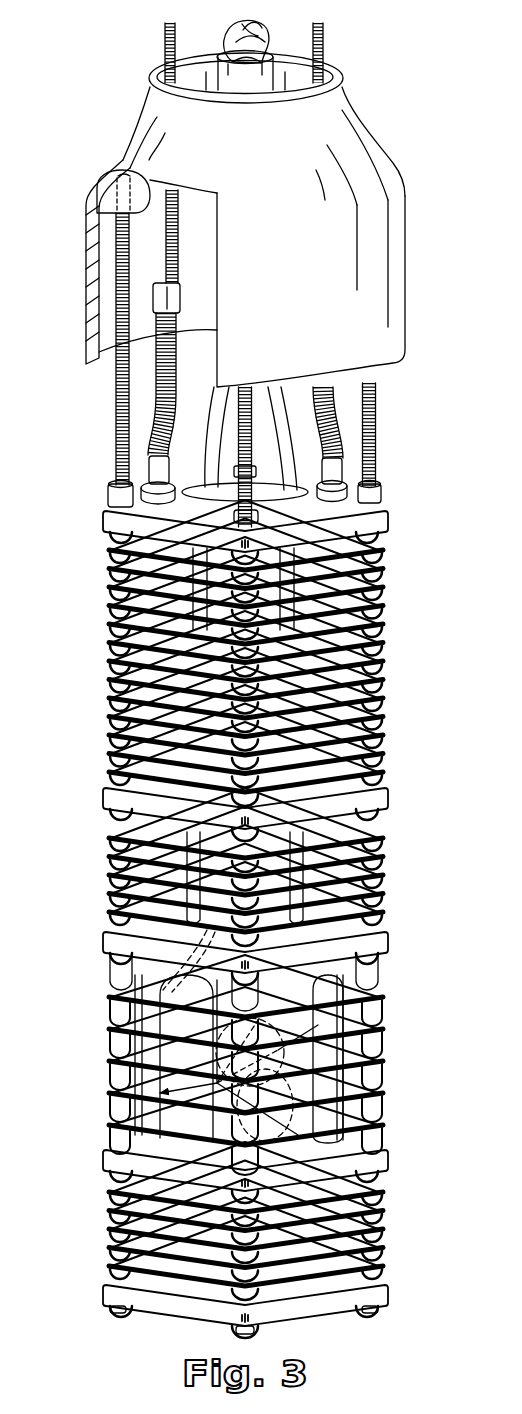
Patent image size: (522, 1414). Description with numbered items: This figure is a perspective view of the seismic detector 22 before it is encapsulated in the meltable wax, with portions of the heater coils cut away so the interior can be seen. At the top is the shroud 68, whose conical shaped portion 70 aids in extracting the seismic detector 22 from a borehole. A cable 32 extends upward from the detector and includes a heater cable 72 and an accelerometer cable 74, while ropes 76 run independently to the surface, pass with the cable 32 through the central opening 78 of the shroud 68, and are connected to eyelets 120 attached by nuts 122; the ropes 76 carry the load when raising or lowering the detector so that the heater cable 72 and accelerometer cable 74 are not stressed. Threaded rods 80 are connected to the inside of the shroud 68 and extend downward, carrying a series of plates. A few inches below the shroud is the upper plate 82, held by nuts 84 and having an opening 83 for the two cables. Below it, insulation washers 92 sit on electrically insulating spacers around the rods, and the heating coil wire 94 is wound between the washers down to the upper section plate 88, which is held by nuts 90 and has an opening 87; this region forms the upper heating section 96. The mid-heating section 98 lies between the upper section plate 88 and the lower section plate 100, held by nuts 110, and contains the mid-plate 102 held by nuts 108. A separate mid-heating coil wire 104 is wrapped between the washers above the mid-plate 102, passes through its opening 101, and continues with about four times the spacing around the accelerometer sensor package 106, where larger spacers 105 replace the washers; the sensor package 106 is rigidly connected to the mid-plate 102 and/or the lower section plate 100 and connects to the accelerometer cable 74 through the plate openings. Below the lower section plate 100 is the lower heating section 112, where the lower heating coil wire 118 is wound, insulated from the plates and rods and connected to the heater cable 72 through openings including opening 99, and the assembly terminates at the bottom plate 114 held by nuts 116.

The seismic detector 22 is at (431, 174).
The cable 32 is at (240, 82).
The shroud 68 is at (409, 262).
The conical shaped portion 70 is at (365, 143).
The heater cable 72 is at (223, 37).
The accelerometer cable 74 is at (267, 25).
The ropes 76 is at (180, 262).
The central opening 78 is at (207, 83).
The threaded rods 80 is at (114, 384).
The upper plate 82 is at (113, 529).
The opening 83 is at (385, 525).
The nuts 84 is at (110, 490).
The opening 87 is at (293, 763).
The upper section plate 88 is at (110, 797).
The nuts 90 is at (105, 783).
The insulation washers 92 is at (108, 663).
The heating coil wire 94 is at (383, 630).
The upper heating section 96 is at (390, 668).
The mid-heating section 98 is at (239, 1052).
The opening 99 is at (312, 1138).
The lower section plate 100 is at (110, 1165).
The opening 101 is at (295, 921).
The mid-plate 102 is at (110, 955).
The mid-heating coil wire 104 is at (387, 887).
The larger spacers 105 is at (383, 1030).
The accelerometer sensor package 106 is at (120, 1096).
The nuts 108 is at (108, 928).
The nuts 110 is at (105, 1141).
The lower heating section 112 is at (237, 1221).
The bottom plate 114 is at (110, 1298).
The nuts 116 is at (390, 1317).
The lower heating coil wire 118 is at (387, 1227).
The eyelets 120 is at (146, 463).
The nuts 122 is at (113, 517).